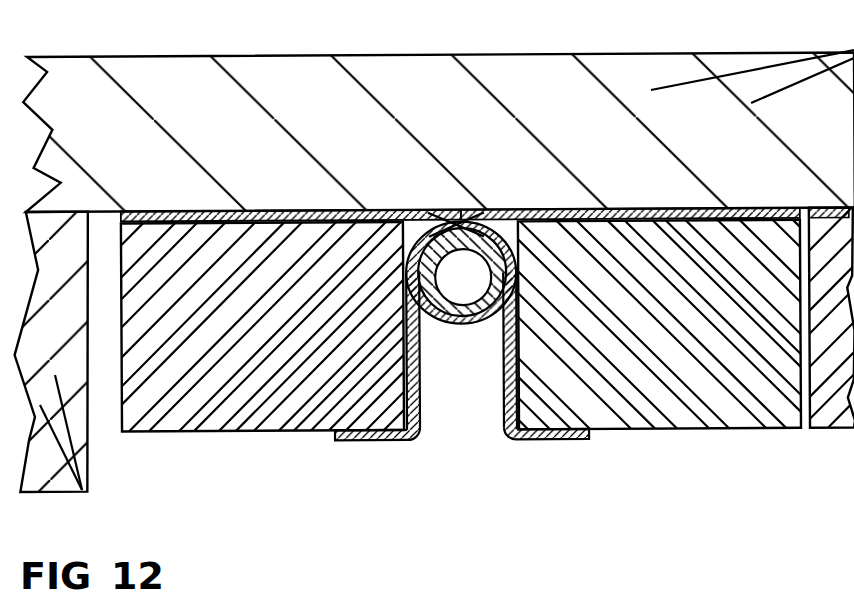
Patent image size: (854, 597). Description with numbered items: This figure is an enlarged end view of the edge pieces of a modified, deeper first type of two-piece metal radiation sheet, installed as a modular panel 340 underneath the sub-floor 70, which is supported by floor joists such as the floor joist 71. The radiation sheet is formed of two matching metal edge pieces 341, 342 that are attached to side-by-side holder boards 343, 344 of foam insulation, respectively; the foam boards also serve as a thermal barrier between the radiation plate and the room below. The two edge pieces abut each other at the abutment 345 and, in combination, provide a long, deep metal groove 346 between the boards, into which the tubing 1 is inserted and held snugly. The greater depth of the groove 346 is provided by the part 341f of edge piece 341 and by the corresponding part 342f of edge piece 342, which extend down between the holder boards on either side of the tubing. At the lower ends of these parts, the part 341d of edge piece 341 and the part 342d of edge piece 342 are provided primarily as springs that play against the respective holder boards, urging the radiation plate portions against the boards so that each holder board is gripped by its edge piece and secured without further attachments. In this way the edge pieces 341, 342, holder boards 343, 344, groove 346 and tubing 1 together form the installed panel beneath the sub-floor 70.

The tubing 1 is at (446, 327).
The sub-floor 70 is at (617, 56).
The floor joist 71 is at (86, 468).
The modular panel 340 is at (460, 341).
The edge piece 341 is at (624, 333).
The spring part of edge piece 341d is at (568, 443).
The groove-deepening part of edge piece 341f is at (491, 350).
The edge piece 342 is at (300, 342).
The spring part of edge piece 342d is at (353, 443).
The groove-deepening part of edge piece 342f is at (421, 387).
The holder board 343 is at (750, 436).
The holder board 344 is at (253, 439).
The abutment of edge pieces 345 is at (459, 212).
The metal groove 346 is at (461, 445).